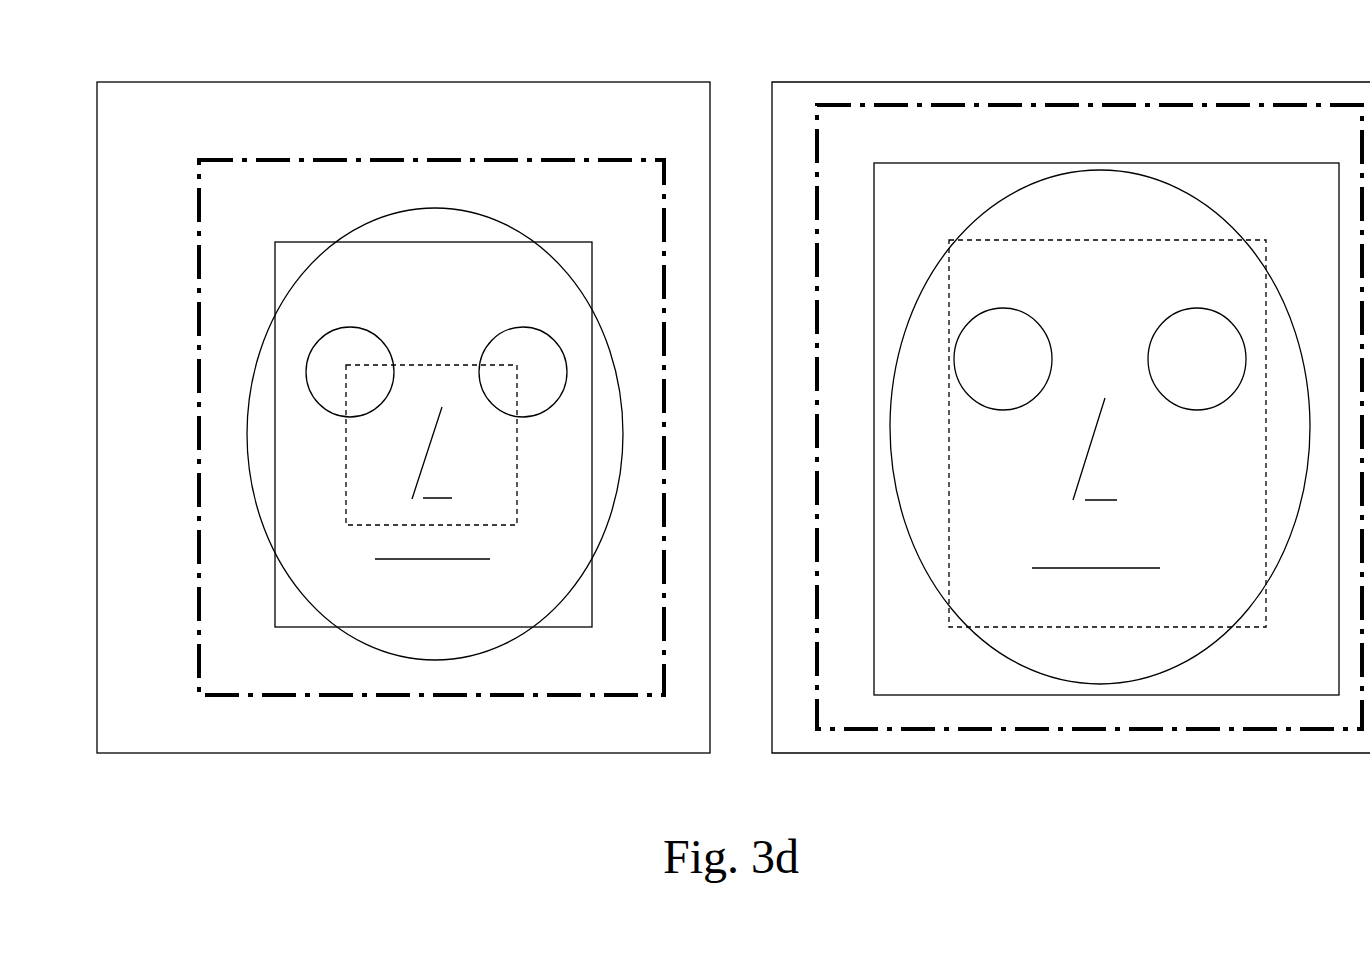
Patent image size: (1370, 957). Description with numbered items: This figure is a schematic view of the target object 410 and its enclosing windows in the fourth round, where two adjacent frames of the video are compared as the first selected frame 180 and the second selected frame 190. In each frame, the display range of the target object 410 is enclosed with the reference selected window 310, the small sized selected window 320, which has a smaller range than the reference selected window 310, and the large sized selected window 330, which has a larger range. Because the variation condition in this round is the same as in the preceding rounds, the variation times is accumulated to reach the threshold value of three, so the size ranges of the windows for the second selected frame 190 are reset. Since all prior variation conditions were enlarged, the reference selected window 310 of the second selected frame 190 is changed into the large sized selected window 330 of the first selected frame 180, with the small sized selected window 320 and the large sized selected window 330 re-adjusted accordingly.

The first selected frame 180 is at (403, 752).
The second selected frame 190 is at (1078, 752).
The reference selected window 310 is at (275, 434).
The small sized selected window 320 is at (432, 525).
The large sized selected window 330 is at (430, 158).
The target object 410 is at (570, 595).